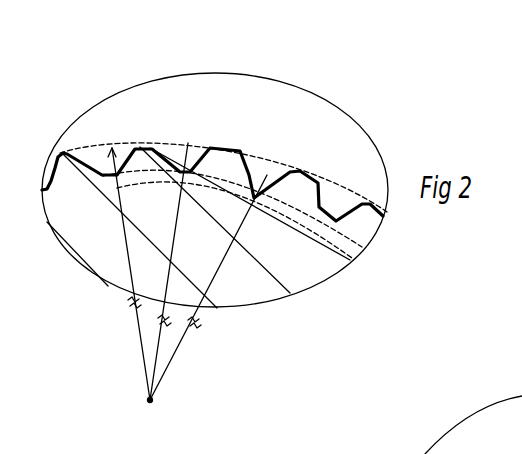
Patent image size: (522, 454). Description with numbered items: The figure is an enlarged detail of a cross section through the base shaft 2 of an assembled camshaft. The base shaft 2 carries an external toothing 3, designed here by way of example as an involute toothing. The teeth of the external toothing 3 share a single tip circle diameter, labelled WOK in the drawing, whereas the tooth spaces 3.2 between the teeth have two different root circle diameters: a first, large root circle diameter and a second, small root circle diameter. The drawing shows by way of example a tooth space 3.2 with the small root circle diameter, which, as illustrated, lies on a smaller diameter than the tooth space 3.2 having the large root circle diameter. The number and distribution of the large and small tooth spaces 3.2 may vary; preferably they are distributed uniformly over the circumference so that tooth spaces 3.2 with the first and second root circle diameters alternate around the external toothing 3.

The base shaft 2 is at (325, 265).
The external toothing 3 is at (320, 162).
The tooth space 3.2 is at (187, 183).
The angle WOK is at (132, 272).